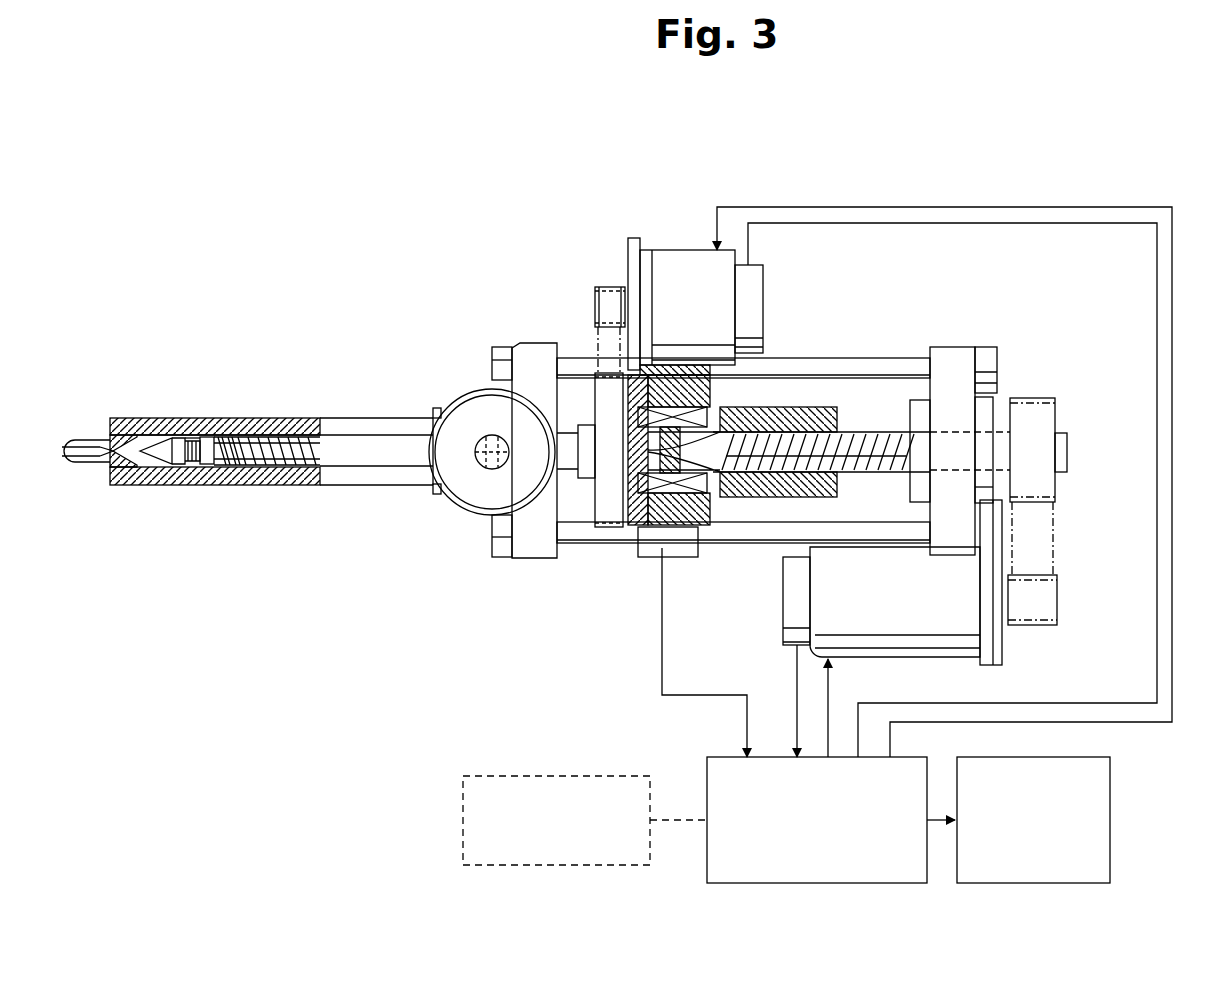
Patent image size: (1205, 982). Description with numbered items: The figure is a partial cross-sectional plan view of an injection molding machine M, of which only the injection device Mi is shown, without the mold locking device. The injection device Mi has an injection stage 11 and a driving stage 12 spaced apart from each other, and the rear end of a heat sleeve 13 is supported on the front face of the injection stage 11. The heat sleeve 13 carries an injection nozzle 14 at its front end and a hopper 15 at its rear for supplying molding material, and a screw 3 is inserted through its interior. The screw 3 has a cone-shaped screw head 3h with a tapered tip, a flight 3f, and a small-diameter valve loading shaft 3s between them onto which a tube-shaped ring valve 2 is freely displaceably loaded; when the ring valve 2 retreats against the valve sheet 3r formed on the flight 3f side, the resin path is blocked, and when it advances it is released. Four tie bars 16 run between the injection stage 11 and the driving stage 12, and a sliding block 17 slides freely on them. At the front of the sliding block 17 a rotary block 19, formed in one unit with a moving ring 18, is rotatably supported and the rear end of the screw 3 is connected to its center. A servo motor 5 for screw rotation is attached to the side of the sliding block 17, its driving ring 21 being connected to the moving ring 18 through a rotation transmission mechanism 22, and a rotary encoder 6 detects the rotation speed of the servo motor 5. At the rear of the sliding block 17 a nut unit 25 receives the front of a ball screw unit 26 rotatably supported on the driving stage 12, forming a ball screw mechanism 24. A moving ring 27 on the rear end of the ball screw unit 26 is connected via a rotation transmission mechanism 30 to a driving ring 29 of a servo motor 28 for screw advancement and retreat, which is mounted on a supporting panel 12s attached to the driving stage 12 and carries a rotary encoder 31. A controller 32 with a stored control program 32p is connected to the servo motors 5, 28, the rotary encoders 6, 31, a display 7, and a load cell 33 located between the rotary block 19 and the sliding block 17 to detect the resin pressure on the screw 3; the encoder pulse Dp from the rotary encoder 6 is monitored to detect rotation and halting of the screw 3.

The ring valve 2 is at (183, 438).
The screw 3 is at (250, 430).
The flight 3f is at (300, 436).
The screw head 3h is at (148, 465).
The valve sheet 3r is at (197, 436).
The valve loading shaft 3s is at (185, 466).
The servo motor for screw rotation 5 is at (680, 252).
The rotary encoder 6 is at (765, 290).
The display 7 is at (1112, 818).
The injection stage 11 is at (512, 348).
The driving stage 12 is at (980, 372).
The supporting panel 12s is at (1003, 652).
The heat sleeve 13 is at (246, 487).
The injection nozzle 14 is at (82, 438).
The hopper 15 is at (455, 395).
The tie bars 16 is at (910, 358).
The sliding block 17 is at (713, 505).
The moving ring 18 is at (585, 480).
The rotary block 19 is at (712, 418).
The driving ring 21 is at (600, 300).
The rotation transmission mechanism 22 is at (592, 338).
The ball screw mechanism 24 is at (812, 404).
The nut unit 25 is at (825, 408).
The ball screw unit 26 is at (885, 432).
The moving ring 27 is at (1055, 430).
The servo motor for screw advancement/retreat 28 is at (870, 655).
The driving ring 29 is at (1060, 603).
The rotation transmission mechanism 30 is at (1058, 528).
The rotary encoder 31 is at (783, 625).
The controller 32 is at (707, 777).
The control program 32p is at (566, 777).
The load cell 33 is at (683, 500).
The encoder pulse Dp is at (1112, 223).
The injection device Mi is at (343, 667).
The injection molding machine M is at (347, 758).